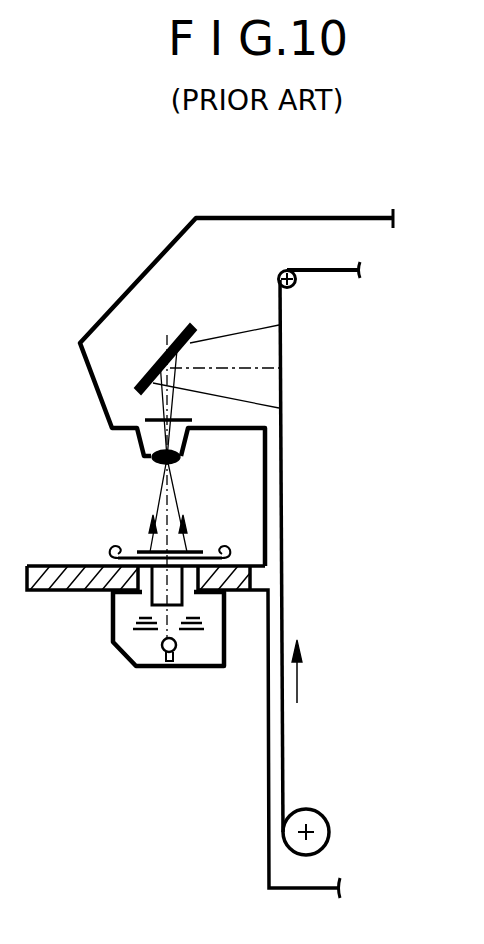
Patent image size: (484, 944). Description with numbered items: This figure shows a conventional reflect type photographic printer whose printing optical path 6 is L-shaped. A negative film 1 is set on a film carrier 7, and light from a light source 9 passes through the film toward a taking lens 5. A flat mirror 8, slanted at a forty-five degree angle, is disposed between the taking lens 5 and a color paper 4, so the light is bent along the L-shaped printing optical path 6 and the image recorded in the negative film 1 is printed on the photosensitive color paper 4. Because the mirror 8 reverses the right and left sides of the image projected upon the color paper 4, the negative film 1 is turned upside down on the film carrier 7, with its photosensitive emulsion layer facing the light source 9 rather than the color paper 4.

The negative film 1 is at (110, 547).
The color paper 4 is at (281, 399).
The taking lens 5 is at (152, 456).
The printing optical path 6 is at (160, 405).
The film carrier 7 is at (200, 546).
The flat mirror 8 is at (153, 369).
The light source 9 is at (163, 649).